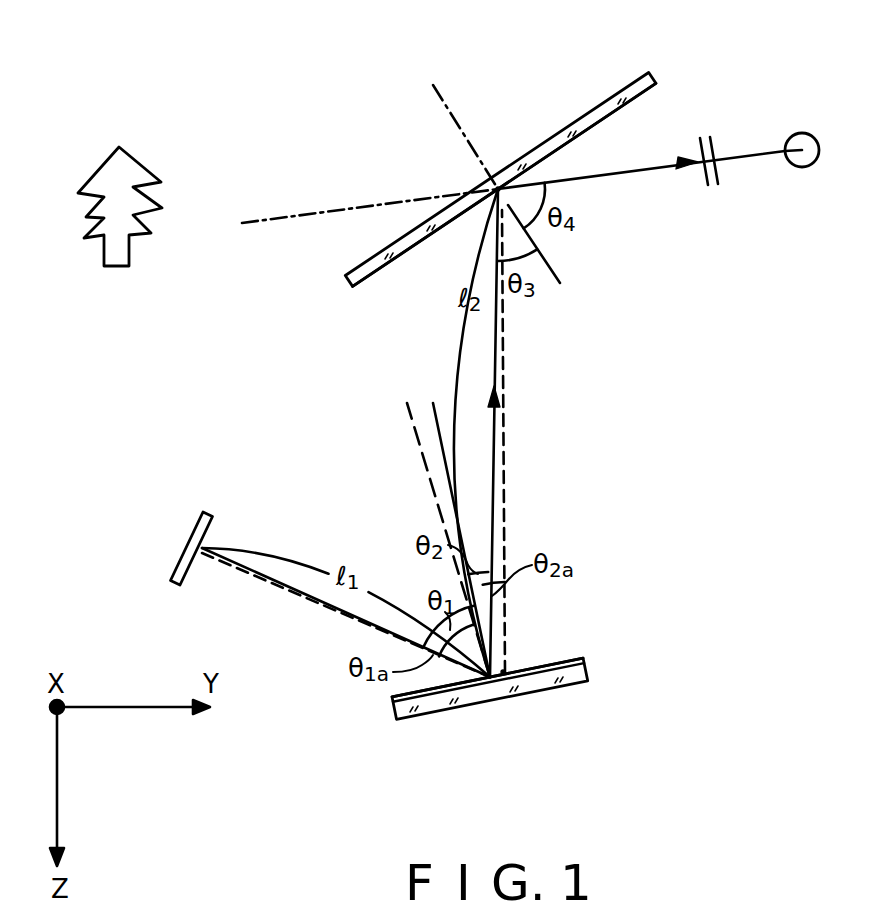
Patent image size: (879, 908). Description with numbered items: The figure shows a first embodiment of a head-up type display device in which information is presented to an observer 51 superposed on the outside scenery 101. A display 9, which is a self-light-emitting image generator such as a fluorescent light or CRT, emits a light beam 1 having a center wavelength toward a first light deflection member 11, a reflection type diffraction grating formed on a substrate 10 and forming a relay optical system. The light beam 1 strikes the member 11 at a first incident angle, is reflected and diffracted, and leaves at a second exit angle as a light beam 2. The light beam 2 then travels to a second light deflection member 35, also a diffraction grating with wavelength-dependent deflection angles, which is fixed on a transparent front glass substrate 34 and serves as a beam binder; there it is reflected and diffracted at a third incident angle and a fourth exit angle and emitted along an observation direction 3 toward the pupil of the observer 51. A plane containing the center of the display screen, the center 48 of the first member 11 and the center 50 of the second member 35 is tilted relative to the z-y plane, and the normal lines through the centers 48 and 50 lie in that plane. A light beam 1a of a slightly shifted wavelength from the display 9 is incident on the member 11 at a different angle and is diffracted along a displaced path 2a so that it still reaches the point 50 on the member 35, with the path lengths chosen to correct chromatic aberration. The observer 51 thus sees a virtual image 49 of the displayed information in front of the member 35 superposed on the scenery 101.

The scenery 101 is at (119, 147).
The virtual image 49 is at (200, 206).
The center of second light deflection member 50 is at (498, 187).
The transparent substrate 34 is at (650, 80).
The second light deflection member 35 is at (612, 118).
The observer 51 is at (800, 133).
The optical axis of observation 3 is at (753, 160).
The light beam 2 is at (498, 426).
The displaced reflected light beam 2a is at (506, 478).
The light beam 1 is at (300, 597).
The light beam 1a is at (342, 610).
The display 9 is at (208, 512).
The substrate 10 is at (588, 673).
The first light deflection member 11 is at (584, 661).
The center of first light deflection member 48 is at (503, 668).